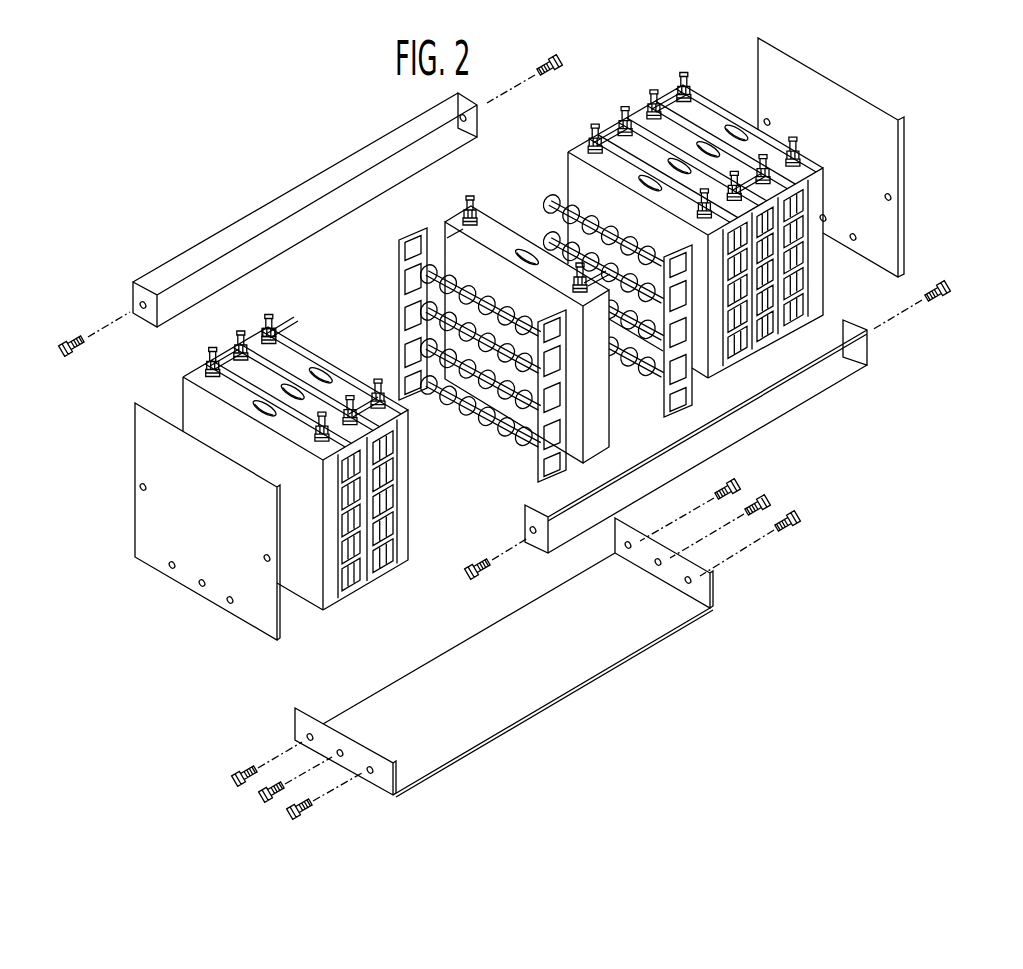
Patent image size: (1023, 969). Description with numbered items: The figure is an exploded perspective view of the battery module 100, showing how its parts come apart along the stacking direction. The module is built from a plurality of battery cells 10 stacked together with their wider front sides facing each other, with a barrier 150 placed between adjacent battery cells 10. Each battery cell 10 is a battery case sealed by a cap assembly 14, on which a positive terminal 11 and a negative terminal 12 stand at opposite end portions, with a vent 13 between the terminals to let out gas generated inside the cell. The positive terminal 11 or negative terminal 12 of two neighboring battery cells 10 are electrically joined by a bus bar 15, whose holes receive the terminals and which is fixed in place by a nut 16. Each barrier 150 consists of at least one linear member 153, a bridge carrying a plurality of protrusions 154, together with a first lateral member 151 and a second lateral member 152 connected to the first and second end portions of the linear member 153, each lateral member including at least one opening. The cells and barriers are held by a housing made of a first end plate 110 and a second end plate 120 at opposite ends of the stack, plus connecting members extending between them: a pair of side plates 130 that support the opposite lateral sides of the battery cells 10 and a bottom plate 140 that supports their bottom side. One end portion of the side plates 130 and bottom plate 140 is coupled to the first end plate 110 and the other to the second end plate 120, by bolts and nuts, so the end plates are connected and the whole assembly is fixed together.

The battery module 100 is at (135, 176).
The battery cell 10 is at (403, 497).
The positive terminal 11 is at (268, 322).
The negative terminal 12 is at (378, 383).
The vent 13 is at (300, 356).
The cap assembly 14 is at (297, 340).
The bus bar 15 is at (223, 360).
The nut 16 is at (264, 336).
The first end plate 110 is at (265, 612).
The second end plate 120 is at (905, 222).
The side plate 130 is at (134, 294).
The bottom plate 140 is at (397, 772).
The barrier 150 is at (533, 159).
The first lateral member 151 is at (398, 273).
The second lateral member 152 is at (565, 415).
The linear member 153 is at (480, 418).
The protrusion 154 is at (492, 427).